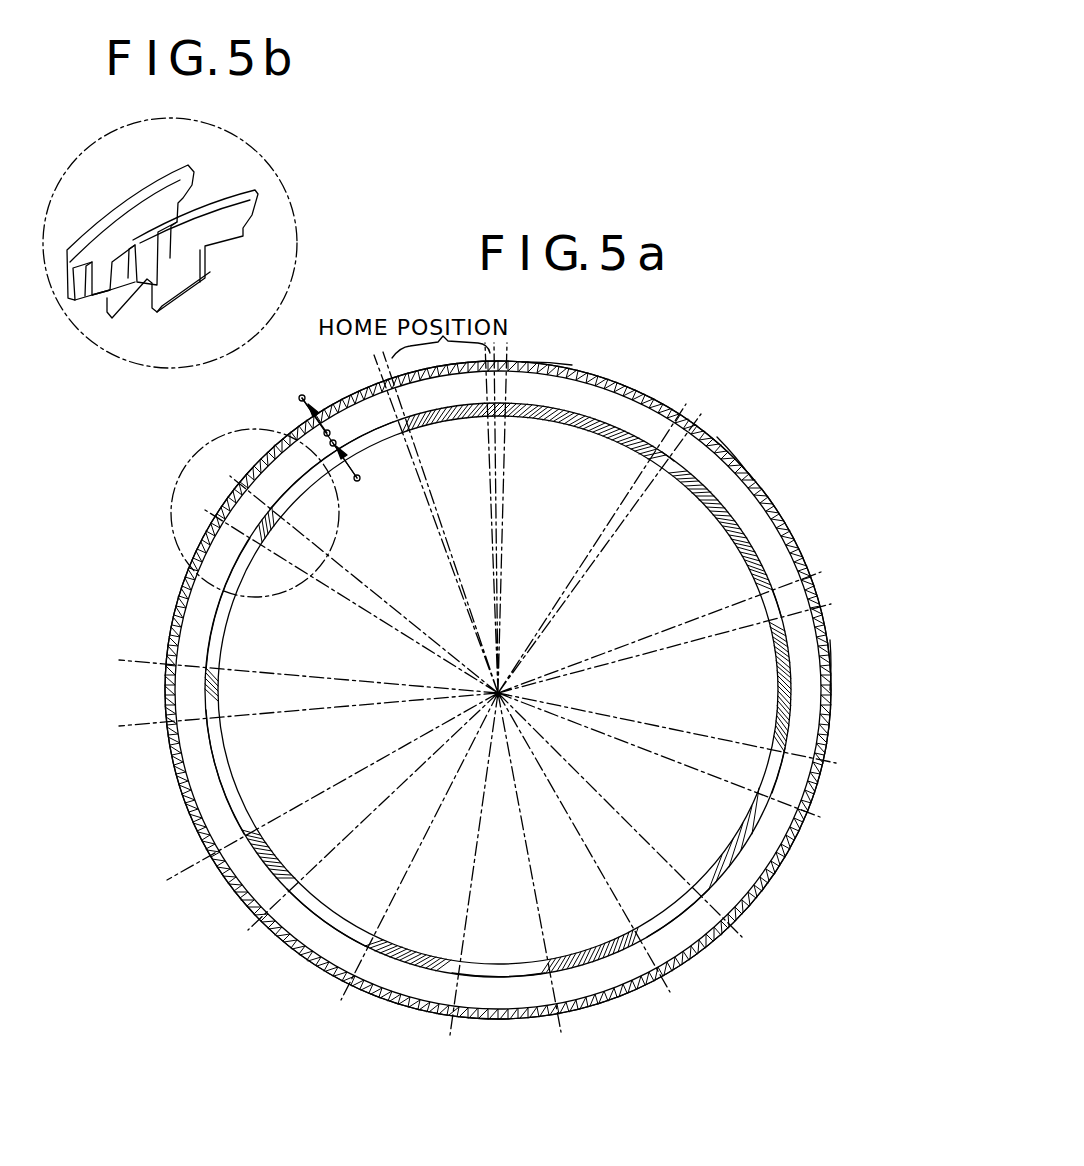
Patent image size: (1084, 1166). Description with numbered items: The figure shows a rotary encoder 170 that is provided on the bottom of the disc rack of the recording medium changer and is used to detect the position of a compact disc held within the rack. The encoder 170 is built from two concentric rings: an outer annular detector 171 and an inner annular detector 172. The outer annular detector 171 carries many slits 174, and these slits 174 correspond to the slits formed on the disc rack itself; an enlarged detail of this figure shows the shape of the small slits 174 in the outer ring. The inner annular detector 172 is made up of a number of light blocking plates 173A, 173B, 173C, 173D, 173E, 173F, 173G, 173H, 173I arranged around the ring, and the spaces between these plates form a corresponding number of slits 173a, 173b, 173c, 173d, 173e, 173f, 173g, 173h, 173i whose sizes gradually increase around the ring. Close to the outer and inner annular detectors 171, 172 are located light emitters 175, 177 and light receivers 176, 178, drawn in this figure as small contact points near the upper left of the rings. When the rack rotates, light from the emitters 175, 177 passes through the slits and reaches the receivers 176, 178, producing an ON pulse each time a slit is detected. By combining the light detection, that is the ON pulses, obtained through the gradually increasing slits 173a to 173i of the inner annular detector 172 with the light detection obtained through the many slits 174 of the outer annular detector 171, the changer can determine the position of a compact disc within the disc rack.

In FIG. 5a, the rotary encoder 170 is at (617, 1022).
In FIG. 5a, the outer annular detector 171 is at (818, 835).
In FIG. 5a, the inner annular detector 172 is at (735, 822).
In FIG. 5a, the light blocking plate 173A is at (612, 417).
In FIG. 5a, the light blocking plate 173B is at (730, 513).
In FIG. 5a, the light blocking plate 173C is at (793, 697).
In FIG. 5a, the light blocking plate 173D is at (760, 860).
In FIG. 5a, the light blocking plate 173E is at (622, 948).
In FIG. 5a, the light blocking plate 173F is at (400, 965).
In FIG. 5a, the light blocking plate 173G is at (267, 867).
In FIG. 5a, the light blocking plate 173H is at (207, 697).
In FIG. 5b, the light blocking plate 173I is at (180, 280).
In FIG. 5a, the light blocking plate 173I is at (255, 530).
In FIG. 5a, the slit 173a is at (672, 437).
In FIG. 5a, the slit 173b is at (783, 592).
In FIG. 5a, the slit 173c is at (773, 773).
In FIG. 5a, the slit 173d is at (680, 918).
In FIG. 5a, the slit 173e is at (513, 980).
In FIG. 5a, the slit 173f is at (330, 917).
In FIG. 5a, the slit 173g is at (222, 770).
In FIG. 5a, the slit 173h is at (223, 620).
In FIG. 5a, the slit 173i is at (205, 445).
In FIG. 5b, the slits 174 is at (88, 306).
In FIG. 5a, the slits 174 is at (572, 365).
In FIG. 5a, the light emitter 175 is at (323, 440).
In FIG. 5a, the light receiver 176 is at (304, 395).
In FIG. 5a, the light emitter 177 is at (359, 481).
In FIG. 5a, the light receiver 178 is at (336, 445).